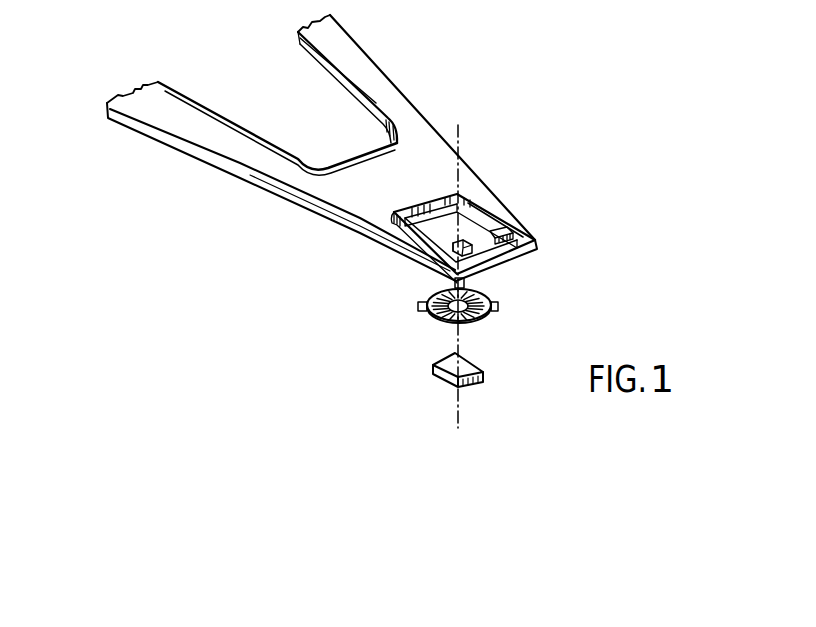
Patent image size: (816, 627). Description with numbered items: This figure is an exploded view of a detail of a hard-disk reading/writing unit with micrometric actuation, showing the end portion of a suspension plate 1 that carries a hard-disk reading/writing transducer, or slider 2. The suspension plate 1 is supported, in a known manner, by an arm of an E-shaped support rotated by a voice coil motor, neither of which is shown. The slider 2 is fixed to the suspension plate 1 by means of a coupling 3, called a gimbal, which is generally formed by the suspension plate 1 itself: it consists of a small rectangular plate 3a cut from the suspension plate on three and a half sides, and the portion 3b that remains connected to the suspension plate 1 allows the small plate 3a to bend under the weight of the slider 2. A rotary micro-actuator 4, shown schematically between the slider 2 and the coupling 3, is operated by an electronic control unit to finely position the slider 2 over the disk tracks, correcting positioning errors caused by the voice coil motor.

The suspension plate 1 is at (373, 80).
The hard-disk reading/writing transducer (slider) 2 is at (432, 388).
The coupling (gimbal) 3 is at (467, 225).
The small rectangular plate 3a is at (428, 248).
The connecting portion 3b is at (485, 246).
The rotary micro-actuator 4 is at (416, 326).